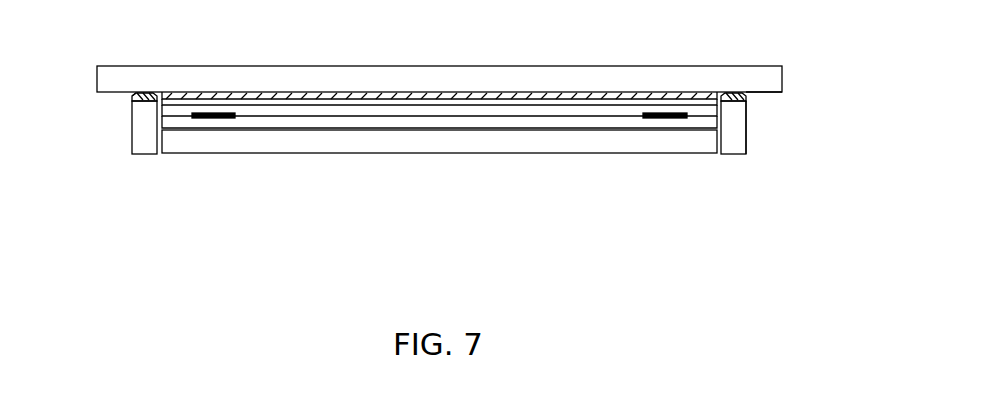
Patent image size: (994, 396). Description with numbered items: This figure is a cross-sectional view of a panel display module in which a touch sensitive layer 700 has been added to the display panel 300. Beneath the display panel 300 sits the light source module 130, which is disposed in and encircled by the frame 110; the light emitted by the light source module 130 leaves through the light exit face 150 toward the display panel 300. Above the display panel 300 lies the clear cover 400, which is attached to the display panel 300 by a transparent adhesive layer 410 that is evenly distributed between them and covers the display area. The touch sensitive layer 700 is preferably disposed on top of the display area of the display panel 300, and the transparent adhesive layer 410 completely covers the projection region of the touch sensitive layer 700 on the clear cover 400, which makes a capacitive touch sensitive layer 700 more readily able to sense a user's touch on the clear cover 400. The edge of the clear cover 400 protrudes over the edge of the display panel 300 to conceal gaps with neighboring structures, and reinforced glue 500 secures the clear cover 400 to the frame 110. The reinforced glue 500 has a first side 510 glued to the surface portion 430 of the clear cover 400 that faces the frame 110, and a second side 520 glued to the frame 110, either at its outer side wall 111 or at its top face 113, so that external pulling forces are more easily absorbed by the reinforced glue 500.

The clear cover 400 is at (585, 78).
The transparent adhesive layer 410 is at (480, 97).
The surface portion 430 is at (775, 94).
The touch sensitive layer 700 is at (423, 103).
The display panel 300 is at (275, 107).
The light exit face 150 is at (345, 121).
The light source module 130 is at (423, 138).
The reinforced glue 500 is at (150, 95).
The first side 510 is at (140, 90).
The second side 520 is at (147, 104).
The frame 110 is at (733, 143).
The outer side wall 111 is at (750, 140).
The top face 113 is at (733, 96).